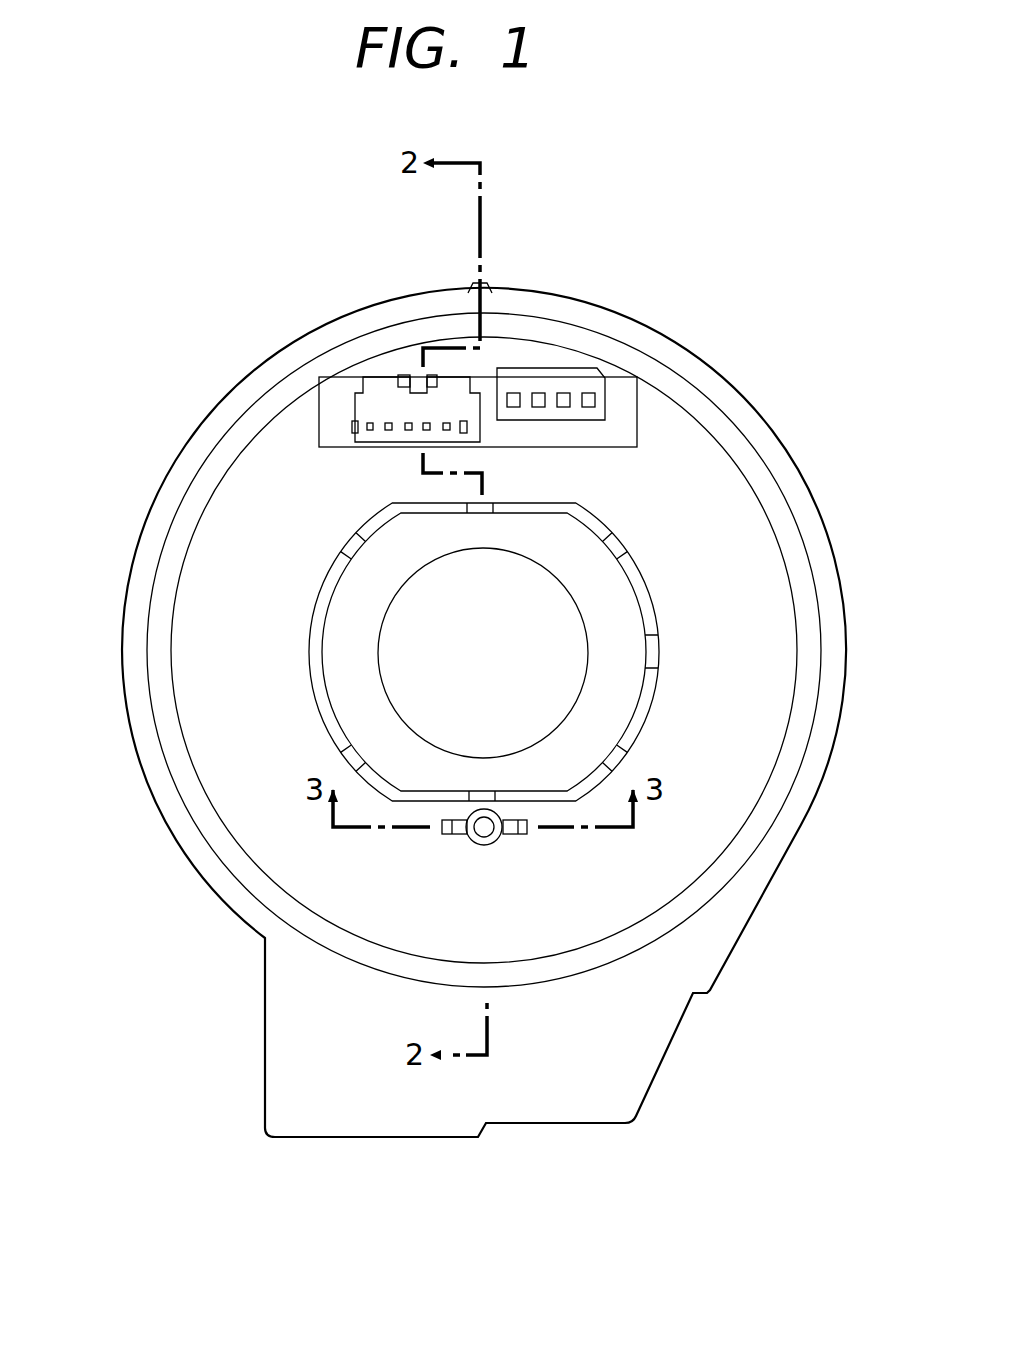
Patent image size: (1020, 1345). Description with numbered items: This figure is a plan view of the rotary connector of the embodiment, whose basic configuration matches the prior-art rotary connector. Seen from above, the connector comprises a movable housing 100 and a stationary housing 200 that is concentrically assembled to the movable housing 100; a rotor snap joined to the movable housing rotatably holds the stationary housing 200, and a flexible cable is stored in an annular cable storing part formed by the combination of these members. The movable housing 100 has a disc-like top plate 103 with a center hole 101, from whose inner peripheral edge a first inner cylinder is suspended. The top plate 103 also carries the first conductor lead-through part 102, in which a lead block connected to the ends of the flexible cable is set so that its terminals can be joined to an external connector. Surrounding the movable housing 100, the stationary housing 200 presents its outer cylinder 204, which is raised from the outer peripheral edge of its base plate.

The stationary housing 200 is at (227, 393).
The outer cylinder 204 is at (178, 455).
The movable housing 100 is at (682, 462).
The center hole 101 is at (572, 630).
The first conductor lead-through part 102 is at (637, 405).
The top plate 103 is at (757, 570).